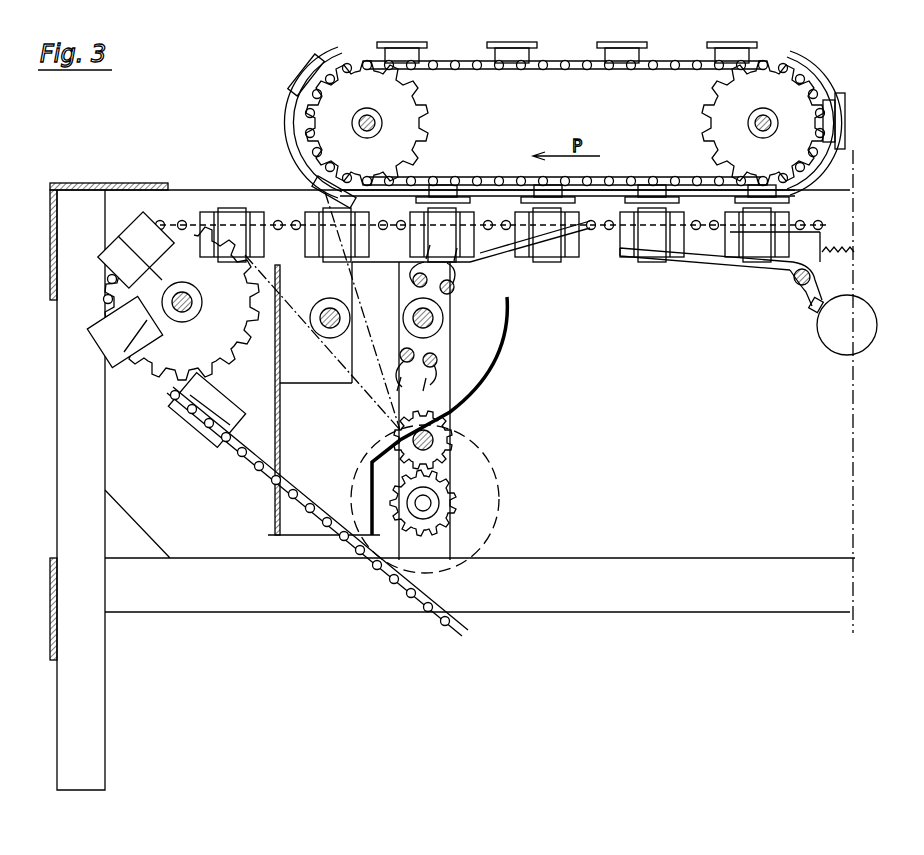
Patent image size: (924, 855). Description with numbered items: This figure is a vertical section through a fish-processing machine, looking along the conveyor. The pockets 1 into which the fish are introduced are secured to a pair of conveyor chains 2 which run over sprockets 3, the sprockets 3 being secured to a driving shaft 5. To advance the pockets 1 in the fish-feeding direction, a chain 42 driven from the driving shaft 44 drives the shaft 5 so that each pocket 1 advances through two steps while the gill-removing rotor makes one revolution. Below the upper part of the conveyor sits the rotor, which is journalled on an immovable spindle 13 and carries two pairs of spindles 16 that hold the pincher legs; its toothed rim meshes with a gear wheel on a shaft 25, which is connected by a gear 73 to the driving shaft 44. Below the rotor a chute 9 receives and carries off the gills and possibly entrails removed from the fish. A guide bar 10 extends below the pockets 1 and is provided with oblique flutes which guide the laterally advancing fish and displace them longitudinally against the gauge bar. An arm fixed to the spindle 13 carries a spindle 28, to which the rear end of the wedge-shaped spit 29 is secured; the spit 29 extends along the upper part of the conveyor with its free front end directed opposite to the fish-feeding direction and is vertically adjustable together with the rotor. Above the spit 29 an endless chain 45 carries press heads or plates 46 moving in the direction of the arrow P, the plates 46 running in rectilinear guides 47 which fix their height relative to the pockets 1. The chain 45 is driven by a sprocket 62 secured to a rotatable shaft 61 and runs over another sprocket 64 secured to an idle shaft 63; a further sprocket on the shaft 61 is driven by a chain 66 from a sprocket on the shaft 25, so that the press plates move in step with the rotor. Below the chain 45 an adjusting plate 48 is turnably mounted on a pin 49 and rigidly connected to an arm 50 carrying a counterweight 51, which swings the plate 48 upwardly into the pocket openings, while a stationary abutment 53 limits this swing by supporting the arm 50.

The pockets 1 is at (210, 208).
The conveyor chains 2 is at (355, 548).
The sprockets 3 is at (214, 344).
The driving shaft 5 is at (196, 302).
The chute 9 is at (470, 396).
The guide bar 10 is at (852, 252).
The spindle 13 is at (437, 318).
The spindles 16 is at (454, 287).
The shaft 25 is at (434, 441).
The spindle 28 is at (336, 318).
The wedge-shaped spit 29 is at (488, 246).
The chain 42 is at (246, 446).
The driving shaft 44 is at (432, 505).
The endless chain 45 is at (650, 62).
The press heads or plates 46 is at (742, 48).
The rectilinear guides 47 is at (780, 192).
The adjusting plate 48 is at (707, 258).
The pin 49 is at (794, 285).
The arm 50 is at (822, 290).
The counterweight 51 is at (840, 340).
The stationary abutment 53 is at (810, 310).
The rotatable shaft 61 is at (415, 118).
The sprocket 62 is at (298, 120).
The idle shaft 63 is at (751, 122).
The sprocket 64 is at (790, 88).
The chain 66 is at (298, 147).
The gear 73 is at (462, 492).